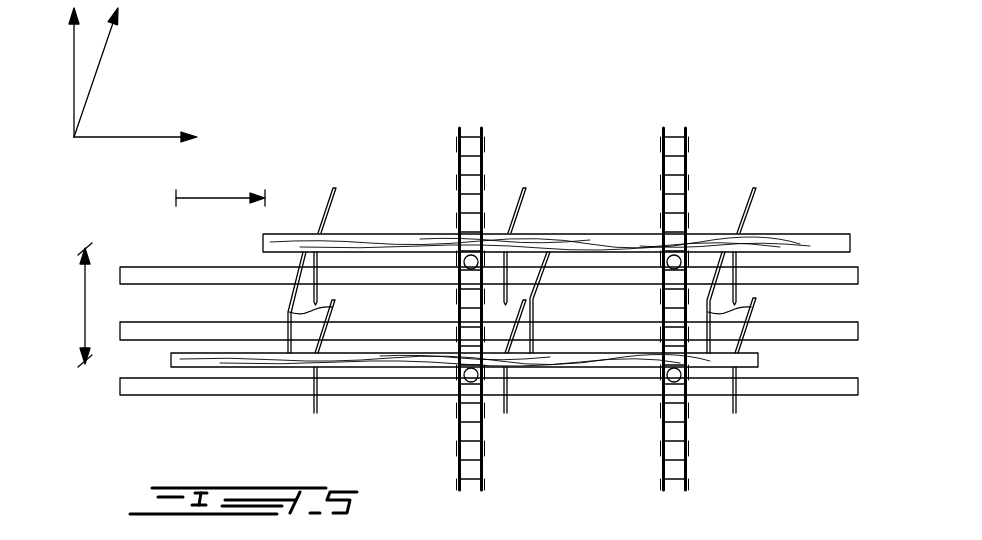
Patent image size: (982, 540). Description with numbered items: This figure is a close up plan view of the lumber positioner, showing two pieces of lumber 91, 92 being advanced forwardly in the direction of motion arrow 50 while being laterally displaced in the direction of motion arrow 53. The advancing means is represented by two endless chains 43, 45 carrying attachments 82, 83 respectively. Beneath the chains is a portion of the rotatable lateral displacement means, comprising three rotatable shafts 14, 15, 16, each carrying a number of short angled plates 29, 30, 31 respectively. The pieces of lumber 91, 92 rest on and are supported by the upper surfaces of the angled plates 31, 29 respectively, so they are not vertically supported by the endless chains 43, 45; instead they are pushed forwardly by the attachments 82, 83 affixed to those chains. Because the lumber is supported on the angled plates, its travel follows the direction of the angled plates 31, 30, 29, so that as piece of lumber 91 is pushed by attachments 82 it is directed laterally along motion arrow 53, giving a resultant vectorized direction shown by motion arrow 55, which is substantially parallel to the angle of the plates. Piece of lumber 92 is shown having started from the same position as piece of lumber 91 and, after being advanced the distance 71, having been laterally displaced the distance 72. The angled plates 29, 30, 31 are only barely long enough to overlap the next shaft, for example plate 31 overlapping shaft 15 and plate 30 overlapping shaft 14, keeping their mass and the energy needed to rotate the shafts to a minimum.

The motion arrow 50 is at (56, 72).
The motion arrow 55 is at (117, 72).
The motion arrow 53 is at (135, 154).
The lateral displacement distance 72 is at (220, 188).
The advanced distance 71 is at (72, 305).
The rotatable shaft 14 is at (858, 275).
The rotatable shaft 15 is at (858, 330).
The rotatable shaft 16 is at (858, 386).
The piece of lumber 92 is at (850, 238).
The piece of lumber 91 is at (171, 360).
The endless chain 43 is at (484, 478).
The endless chain 45 is at (688, 478).
The attachment 83 is at (465, 268).
The attachment 82 is at (465, 382).
The angled plate 29 is at (326, 208).
The angled plate 30 is at (335, 310).
The angled plate 31 is at (316, 410).